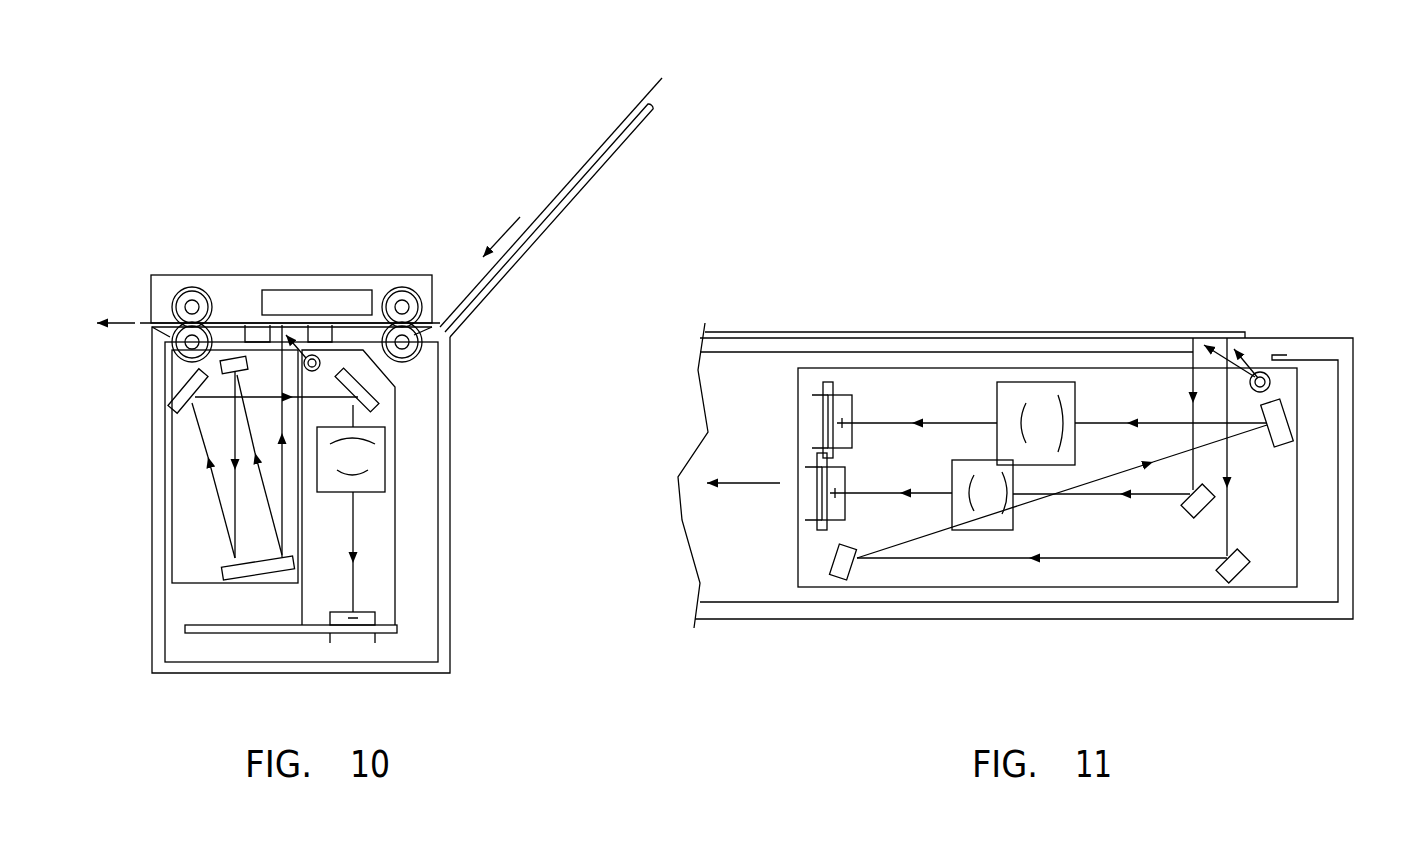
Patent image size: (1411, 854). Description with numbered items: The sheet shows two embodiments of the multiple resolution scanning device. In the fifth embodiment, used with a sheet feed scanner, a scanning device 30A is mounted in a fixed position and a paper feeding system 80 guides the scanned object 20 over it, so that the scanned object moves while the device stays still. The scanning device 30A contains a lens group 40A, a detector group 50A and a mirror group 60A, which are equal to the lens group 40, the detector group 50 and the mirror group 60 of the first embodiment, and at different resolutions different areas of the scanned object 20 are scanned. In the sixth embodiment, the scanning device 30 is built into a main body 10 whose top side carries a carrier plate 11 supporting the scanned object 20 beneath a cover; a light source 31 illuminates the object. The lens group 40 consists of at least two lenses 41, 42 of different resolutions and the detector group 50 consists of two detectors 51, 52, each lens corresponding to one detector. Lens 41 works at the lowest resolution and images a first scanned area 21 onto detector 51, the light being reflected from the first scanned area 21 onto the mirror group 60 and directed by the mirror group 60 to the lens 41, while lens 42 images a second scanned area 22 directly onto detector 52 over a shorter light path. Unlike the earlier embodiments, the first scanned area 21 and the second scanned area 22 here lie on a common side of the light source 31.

In FIG. 11, the main body 10 is at (1345, 333).
In FIG. 10, the carrier plate 11 is at (253, 333).
In FIG. 10, the scanned object 20 is at (560, 187).
In FIG. 11, the scanned object 20 is at (965, 332).
In FIG. 11, the first scanned area 21 is at (1228, 332).
In FIG. 11, the second scanned area 22 is at (1193, 332).
In FIG. 11, the scanning device 30 is at (797, 537).
In FIG. 11, the light source 31 is at (1275, 360).
In FIG. 11, the lens group 40 is at (1048, 542).
In FIG. 11, the lens 41 is at (1068, 465).
In FIG. 11, the lens 42 is at (992, 527).
In FIG. 11, the detector group 50 is at (847, 462).
In FIG. 11, the detector 51 is at (843, 393).
In FIG. 11, the detector 52 is at (833, 527).
In FIG. 11, the mirror group 60 is at (1240, 577).
In FIG. 10, the paper feeding system 80 is at (322, 272).
In FIG. 10, the scanning device 30A is at (150, 617).
In FIG. 10, the lens group 40A is at (413, 472).
In FIG. 10, the detector group 50A is at (407, 633).
In FIG. 10, the mirror group 60A is at (195, 503).